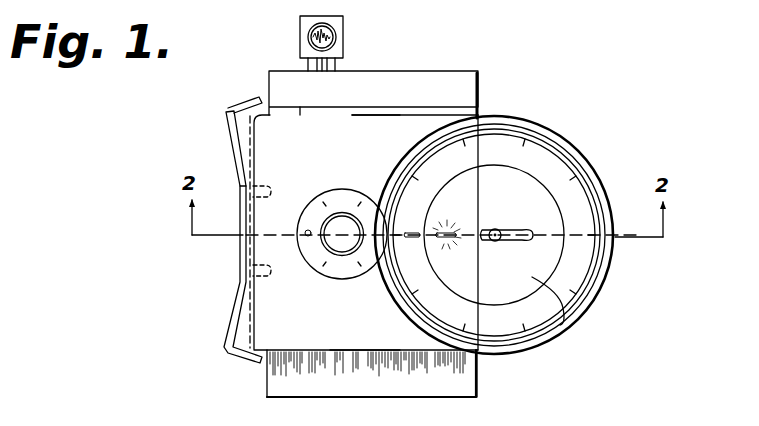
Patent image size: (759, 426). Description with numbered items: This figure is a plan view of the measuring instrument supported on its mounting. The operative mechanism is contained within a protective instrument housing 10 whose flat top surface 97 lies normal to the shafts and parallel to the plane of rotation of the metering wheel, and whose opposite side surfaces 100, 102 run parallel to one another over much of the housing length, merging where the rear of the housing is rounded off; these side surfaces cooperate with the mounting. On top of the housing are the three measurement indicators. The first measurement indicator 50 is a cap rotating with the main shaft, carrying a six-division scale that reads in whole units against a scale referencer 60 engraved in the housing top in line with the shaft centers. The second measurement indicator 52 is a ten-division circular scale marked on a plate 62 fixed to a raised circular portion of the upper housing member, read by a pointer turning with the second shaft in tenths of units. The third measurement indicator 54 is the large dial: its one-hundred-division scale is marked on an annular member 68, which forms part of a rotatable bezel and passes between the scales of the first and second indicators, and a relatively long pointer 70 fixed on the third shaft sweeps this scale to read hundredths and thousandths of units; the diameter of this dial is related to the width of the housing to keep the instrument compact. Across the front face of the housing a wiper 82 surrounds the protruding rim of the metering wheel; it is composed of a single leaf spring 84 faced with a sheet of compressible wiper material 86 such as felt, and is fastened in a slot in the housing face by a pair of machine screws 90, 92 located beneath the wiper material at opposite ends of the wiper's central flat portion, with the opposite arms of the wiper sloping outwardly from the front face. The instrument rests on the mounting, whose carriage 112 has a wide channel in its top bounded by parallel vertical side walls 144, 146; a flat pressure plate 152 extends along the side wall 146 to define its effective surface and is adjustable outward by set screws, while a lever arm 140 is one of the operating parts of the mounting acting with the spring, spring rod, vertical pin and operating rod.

The instrument housing 10 is at (609, 277).
The first measurement indicator 50 is at (348, 279).
The second measurement indicator 52 is at (455, 262).
The third measurement indicator 54 is at (506, 228).
The scale referencer 60 is at (292, 235).
The plate 62 is at (572, 312).
The annular member 68 is at (532, 310).
The pointer 70 is at (527, 241).
The wiper 82 is at (231, 351).
The leaf spring 84 is at (240, 130).
The wiper material 86 is at (229, 114).
The machine screw 90 is at (272, 185).
The machine screw 92 is at (266, 277).
The top surface 97 is at (306, 124).
The side surface 100 is at (398, 114).
The side surface 102 is at (362, 356).
The carriage 112 is at (330, 378).
The lever arm 140 is at (331, 37).
The side wall 144 is at (430, 348).
The side wall 146 is at (356, 116).
The pressure plate 152 is at (480, 112).